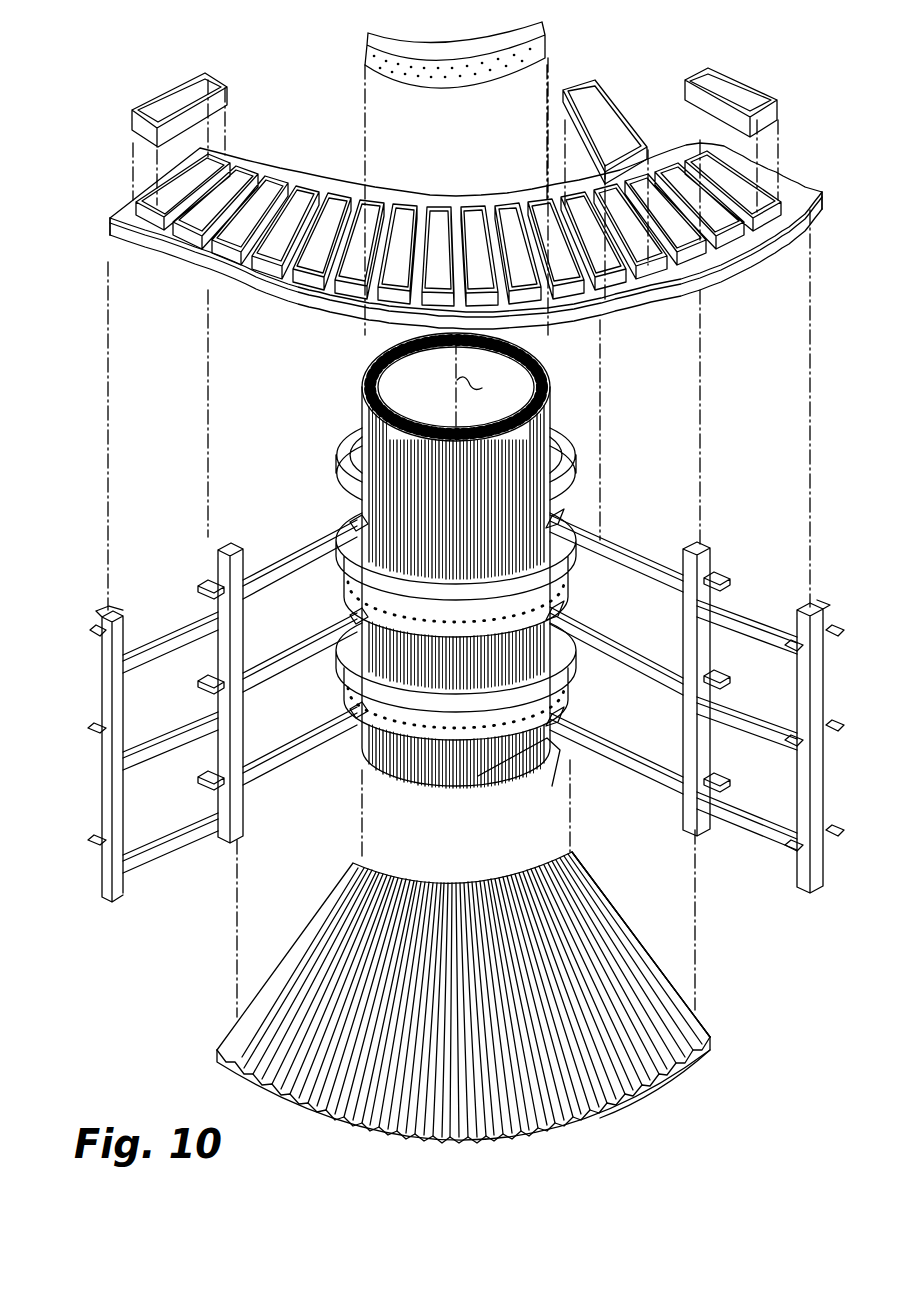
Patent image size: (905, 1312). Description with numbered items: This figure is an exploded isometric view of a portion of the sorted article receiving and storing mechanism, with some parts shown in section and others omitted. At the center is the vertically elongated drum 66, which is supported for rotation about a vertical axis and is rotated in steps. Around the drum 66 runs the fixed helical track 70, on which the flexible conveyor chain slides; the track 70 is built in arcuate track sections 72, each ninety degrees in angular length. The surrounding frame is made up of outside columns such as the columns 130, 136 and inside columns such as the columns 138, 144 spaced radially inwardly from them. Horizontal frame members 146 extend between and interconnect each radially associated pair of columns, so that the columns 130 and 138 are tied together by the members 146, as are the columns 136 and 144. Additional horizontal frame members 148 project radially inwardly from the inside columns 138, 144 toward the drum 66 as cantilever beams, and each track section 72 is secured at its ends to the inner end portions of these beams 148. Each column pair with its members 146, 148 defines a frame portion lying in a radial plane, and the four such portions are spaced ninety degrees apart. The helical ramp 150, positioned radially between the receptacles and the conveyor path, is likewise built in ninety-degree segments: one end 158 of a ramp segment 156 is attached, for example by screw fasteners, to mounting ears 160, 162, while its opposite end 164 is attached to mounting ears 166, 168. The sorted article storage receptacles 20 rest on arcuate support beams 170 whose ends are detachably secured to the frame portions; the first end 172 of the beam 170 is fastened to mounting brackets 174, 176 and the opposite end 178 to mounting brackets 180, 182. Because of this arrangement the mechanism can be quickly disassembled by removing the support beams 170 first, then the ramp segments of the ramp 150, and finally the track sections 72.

The storage receptacle 20 is at (176, 96).
The track section 72 is at (490, 56).
The arcuate support beam 170 is at (280, 177).
The opposite end of beam 178 is at (112, 215).
The first end of beam segment 172 is at (815, 186).
The drum 66 is at (545, 358).
The helical track 70 is at (322, 465).
The mounting ear 166 is at (335, 590).
The outside column 130 is at (125, 880).
The mounting bracket 180 is at (118, 645).
The inside column 138 is at (243, 813).
The mounting bracket 182 is at (205, 588).
The mounting ear 168 is at (257, 550).
The horizontal frame member 146 is at (162, 628).
The horizontal frame member 148 is at (285, 560).
The inside column 144 is at (683, 820).
The mounting bracket 174 is at (713, 577).
The mounting ear 160 is at (575, 543).
The mounting ear 162 is at (683, 695).
The outside column 136 is at (807, 883).
The mounting bracket 176 is at (797, 613).
The opposite end of ramp segment 164 is at (307, 927).
The end of ramp segment 158 is at (683, 990).
The helical ramp 150 is at (395, 1143).
The ramp segment 156 is at (637, 1087).